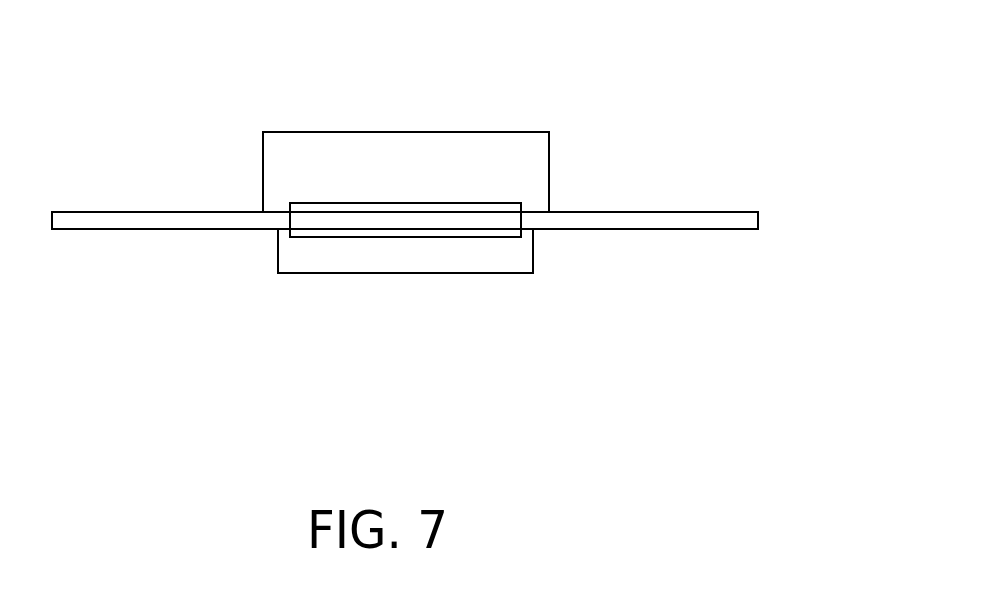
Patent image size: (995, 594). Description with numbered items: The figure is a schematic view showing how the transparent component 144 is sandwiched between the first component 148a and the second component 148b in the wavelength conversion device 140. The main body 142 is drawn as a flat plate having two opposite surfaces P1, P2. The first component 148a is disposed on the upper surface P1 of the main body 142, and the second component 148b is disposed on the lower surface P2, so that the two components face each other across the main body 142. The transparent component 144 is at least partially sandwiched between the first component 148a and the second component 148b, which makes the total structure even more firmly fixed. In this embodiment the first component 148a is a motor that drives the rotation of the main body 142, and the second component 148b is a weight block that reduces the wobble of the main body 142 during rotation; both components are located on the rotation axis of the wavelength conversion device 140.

The wavelength conversion device 140 is at (605, 268).
The main body 142 is at (677, 222).
The transparent component 144 is at (449, 217).
The first component 148a is at (362, 152).
The second component 148b is at (420, 253).
The first surface P1 is at (160, 210).
The second surface P2 is at (198, 230).